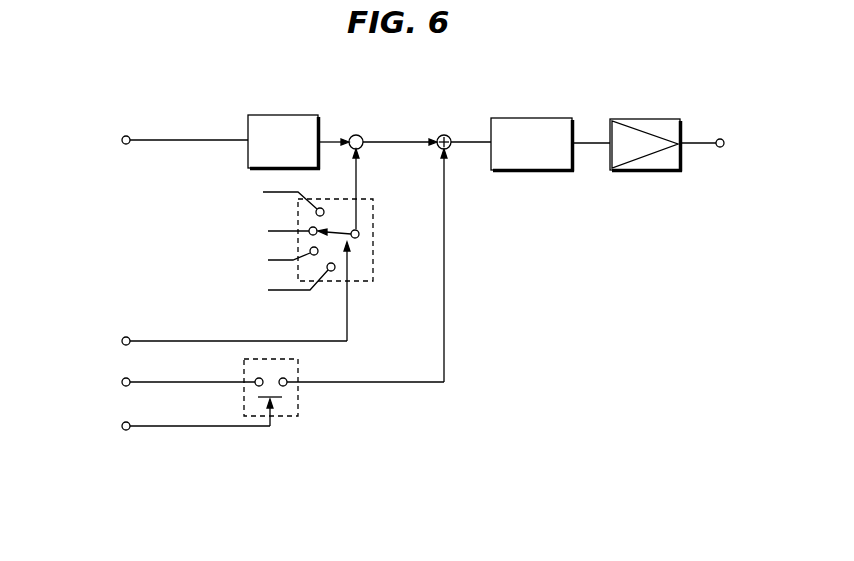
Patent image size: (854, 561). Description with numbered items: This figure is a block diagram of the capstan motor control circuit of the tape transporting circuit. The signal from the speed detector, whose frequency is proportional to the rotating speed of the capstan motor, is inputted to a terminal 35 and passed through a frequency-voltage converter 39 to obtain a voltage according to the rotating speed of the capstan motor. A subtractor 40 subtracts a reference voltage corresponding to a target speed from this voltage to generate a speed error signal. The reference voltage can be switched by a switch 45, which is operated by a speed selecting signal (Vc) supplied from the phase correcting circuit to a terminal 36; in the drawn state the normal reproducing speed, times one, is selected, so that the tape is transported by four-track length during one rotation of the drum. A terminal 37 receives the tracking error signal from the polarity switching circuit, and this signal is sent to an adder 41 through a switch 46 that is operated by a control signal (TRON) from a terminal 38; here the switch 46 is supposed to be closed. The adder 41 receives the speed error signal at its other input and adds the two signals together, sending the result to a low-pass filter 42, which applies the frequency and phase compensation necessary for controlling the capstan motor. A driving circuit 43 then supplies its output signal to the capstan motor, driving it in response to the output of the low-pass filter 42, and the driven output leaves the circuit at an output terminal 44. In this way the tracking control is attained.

The terminal 35 is at (126, 136).
The terminal 36 is at (126, 337).
The terminal 37 is at (121, 383).
The terminal 38 is at (126, 430).
The frequency-voltage converter 39 is at (281, 115).
The subtractor 40 is at (356, 135).
The adder 41 is at (444, 135).
The low-pass filter 42 is at (545, 118).
The driving circuit 43 is at (663, 119).
The output terminal 44 is at (721, 139).
The switch 45 is at (373, 252).
The switch 46 is at (298, 402).